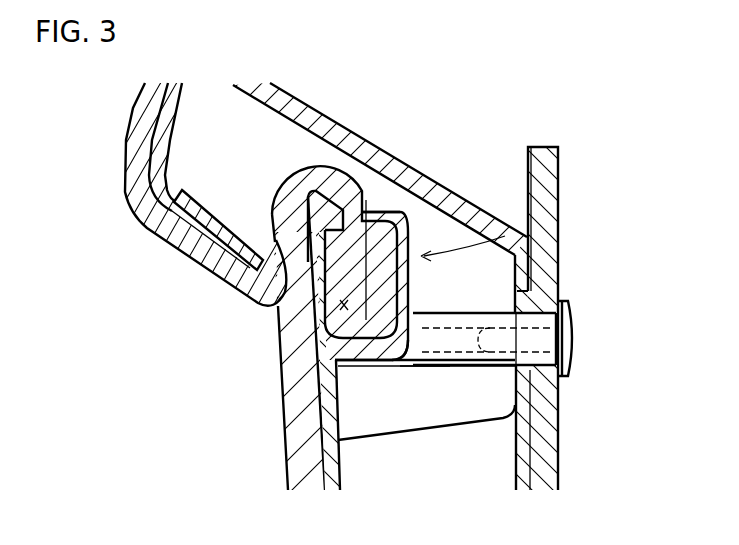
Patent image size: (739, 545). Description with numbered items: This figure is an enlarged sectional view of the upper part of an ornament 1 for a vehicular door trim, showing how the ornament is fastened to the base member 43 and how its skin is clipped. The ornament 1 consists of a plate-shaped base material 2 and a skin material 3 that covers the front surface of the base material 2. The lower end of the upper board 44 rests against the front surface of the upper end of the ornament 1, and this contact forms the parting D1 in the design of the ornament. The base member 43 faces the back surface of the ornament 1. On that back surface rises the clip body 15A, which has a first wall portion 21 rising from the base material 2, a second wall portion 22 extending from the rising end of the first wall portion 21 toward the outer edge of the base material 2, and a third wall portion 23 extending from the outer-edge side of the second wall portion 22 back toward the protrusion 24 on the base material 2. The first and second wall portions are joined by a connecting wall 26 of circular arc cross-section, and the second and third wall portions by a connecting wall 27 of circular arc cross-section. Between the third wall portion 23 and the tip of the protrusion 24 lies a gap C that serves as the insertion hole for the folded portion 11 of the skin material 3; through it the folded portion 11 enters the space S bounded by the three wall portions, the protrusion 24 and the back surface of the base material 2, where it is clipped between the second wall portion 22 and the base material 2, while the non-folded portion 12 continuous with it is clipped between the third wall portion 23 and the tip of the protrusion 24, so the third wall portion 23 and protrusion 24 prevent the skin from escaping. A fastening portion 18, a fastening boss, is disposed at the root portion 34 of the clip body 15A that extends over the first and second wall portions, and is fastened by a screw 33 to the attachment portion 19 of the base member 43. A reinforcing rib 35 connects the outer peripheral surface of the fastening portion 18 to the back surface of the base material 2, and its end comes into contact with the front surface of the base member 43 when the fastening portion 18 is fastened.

The ornament 1 is at (263, 427).
The base material 2 is at (342, 468).
The skin material 3 is at (284, 460).
The folded portion 11 is at (378, 210).
The non-folded portion 12 is at (366, 200).
The clip body 15A is at (530, 237).
The fastening portion 18 is at (498, 312).
The attachment portion 19 is at (568, 295).
The first wall portion 21 is at (380, 367).
The second wall portion 22 is at (416, 291).
The third wall portion 23 is at (394, 232).
The protrusion 24 is at (332, 210).
The connecting wall 26 is at (414, 369).
The connecting wall 27 is at (416, 186).
The screw 33 is at (573, 340).
The root portion 34 is at (421, 368).
The reinforcing rib 35 is at (524, 450).
The base member 43 is at (536, 428).
The upper board 44 is at (122, 184).
The gap C is at (351, 206).
The parting D1 is at (260, 312).
The space S is at (282, 327).